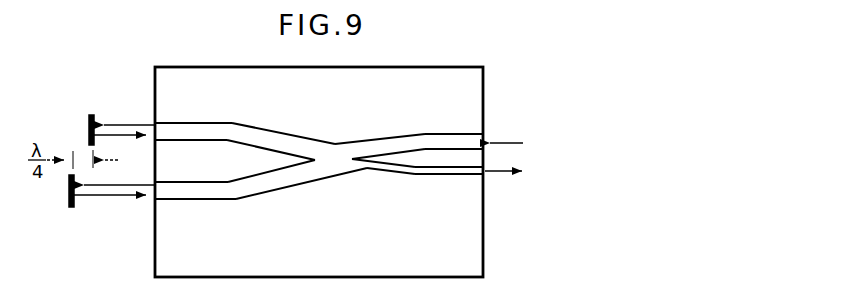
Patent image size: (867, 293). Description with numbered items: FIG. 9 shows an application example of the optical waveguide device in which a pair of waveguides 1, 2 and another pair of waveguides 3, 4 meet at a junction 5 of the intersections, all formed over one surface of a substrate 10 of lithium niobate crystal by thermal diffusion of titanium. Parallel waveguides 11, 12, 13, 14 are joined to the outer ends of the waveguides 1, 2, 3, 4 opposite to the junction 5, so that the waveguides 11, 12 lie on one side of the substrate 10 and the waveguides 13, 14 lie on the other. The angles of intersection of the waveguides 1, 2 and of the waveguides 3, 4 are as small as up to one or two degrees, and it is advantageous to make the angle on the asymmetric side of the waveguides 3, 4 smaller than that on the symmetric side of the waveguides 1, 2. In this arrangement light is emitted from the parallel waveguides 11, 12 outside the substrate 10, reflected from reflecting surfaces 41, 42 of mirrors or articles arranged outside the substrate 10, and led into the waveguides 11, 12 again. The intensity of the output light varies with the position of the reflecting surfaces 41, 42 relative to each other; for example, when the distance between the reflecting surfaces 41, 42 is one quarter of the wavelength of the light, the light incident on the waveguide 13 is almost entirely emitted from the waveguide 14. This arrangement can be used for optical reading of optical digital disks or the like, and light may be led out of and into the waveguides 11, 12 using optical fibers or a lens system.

The substrate 10 is at (480, 80).
The waveguide 1 is at (275, 140).
The waveguide 2 is at (278, 185).
The waveguide 3 is at (406, 140).
The waveguide 4 is at (400, 170).
The junction 5 is at (340, 163).
The parallel waveguide 11 is at (198, 132).
The parallel waveguide 12 is at (200, 193).
The parallel waveguide 13 is at (463, 143).
The parallel waveguide 14 is at (460, 175).
The reflecting surface 41 is at (92, 113).
The reflecting surface 42 is at (71, 209).